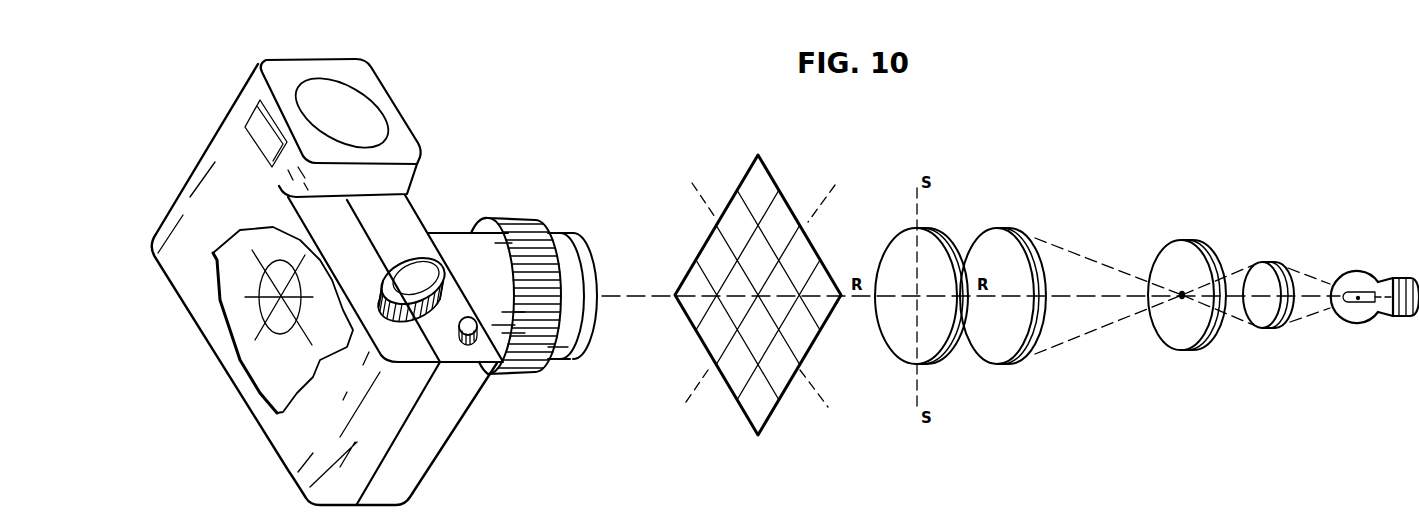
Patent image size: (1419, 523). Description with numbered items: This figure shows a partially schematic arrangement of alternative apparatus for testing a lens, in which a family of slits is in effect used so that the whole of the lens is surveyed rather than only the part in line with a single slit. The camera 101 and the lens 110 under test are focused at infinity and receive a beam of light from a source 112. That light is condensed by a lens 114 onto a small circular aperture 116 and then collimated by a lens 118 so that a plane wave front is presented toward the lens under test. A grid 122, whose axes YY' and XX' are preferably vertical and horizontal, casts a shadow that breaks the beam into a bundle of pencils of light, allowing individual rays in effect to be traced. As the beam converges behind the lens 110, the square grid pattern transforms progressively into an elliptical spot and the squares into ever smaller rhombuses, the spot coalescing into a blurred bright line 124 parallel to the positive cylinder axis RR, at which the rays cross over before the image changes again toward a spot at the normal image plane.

The camera 101 is at (418, 195).
The lens 110 is at (507, 372).
The source 112 is at (1408, 228).
The lens 114 is at (1256, 262).
The small circular aperture 116 is at (1182, 296).
The lens 118 is at (992, 228).
The grid 122 is at (759, 156).
The blurred bright line 124 is at (258, 297).